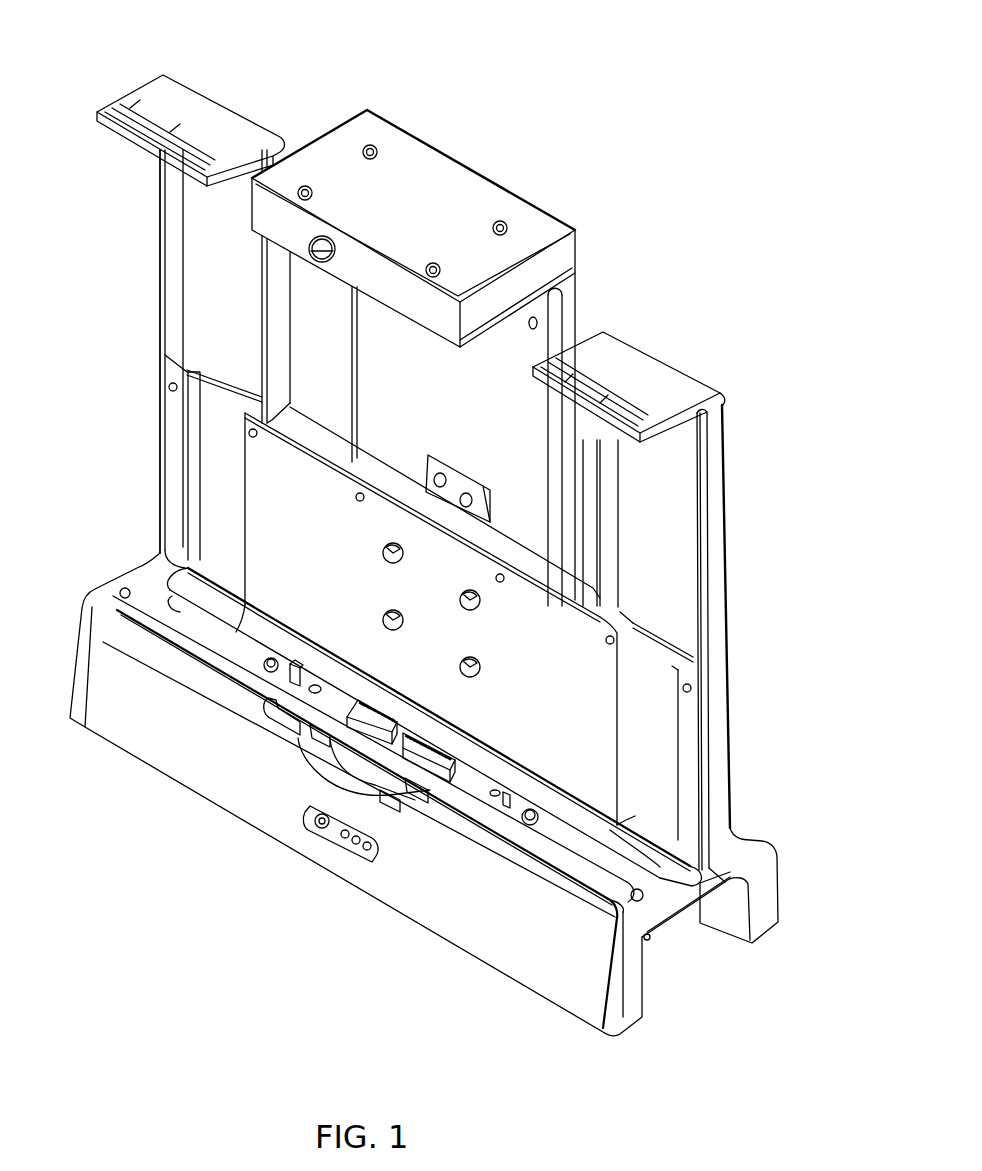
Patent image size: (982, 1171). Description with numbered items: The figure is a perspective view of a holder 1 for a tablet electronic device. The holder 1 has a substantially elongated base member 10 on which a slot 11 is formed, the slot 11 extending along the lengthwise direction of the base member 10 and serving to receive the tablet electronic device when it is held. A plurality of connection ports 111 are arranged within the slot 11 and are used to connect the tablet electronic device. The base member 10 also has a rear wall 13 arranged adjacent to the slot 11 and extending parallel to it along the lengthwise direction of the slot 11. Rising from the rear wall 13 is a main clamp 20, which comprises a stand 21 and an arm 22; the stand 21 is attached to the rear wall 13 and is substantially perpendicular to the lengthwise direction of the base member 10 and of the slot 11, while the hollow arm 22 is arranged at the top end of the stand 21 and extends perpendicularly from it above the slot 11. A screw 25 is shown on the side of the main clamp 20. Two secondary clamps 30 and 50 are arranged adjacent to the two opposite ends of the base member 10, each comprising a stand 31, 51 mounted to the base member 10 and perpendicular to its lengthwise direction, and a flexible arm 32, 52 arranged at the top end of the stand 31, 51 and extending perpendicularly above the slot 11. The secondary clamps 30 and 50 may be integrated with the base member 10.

The holder 1 is at (621, 121).
The base member 10 is at (487, 920).
The slot 11 is at (160, 600).
The connection ports 111 is at (432, 748).
The rear wall 13 is at (583, 713).
The main clamp 20 is at (470, 165).
The stand 21 is at (517, 340).
The arm 22 is at (413, 185).
The screw 25 is at (310, 250).
The secondary clamp 30 is at (160, 258).
The stand 31 is at (200, 220).
The flexible arm 32 is at (143, 97).
The secondary clamp 50 is at (718, 556).
The stand 51 is at (670, 487).
The flexible arm 52 is at (641, 385).